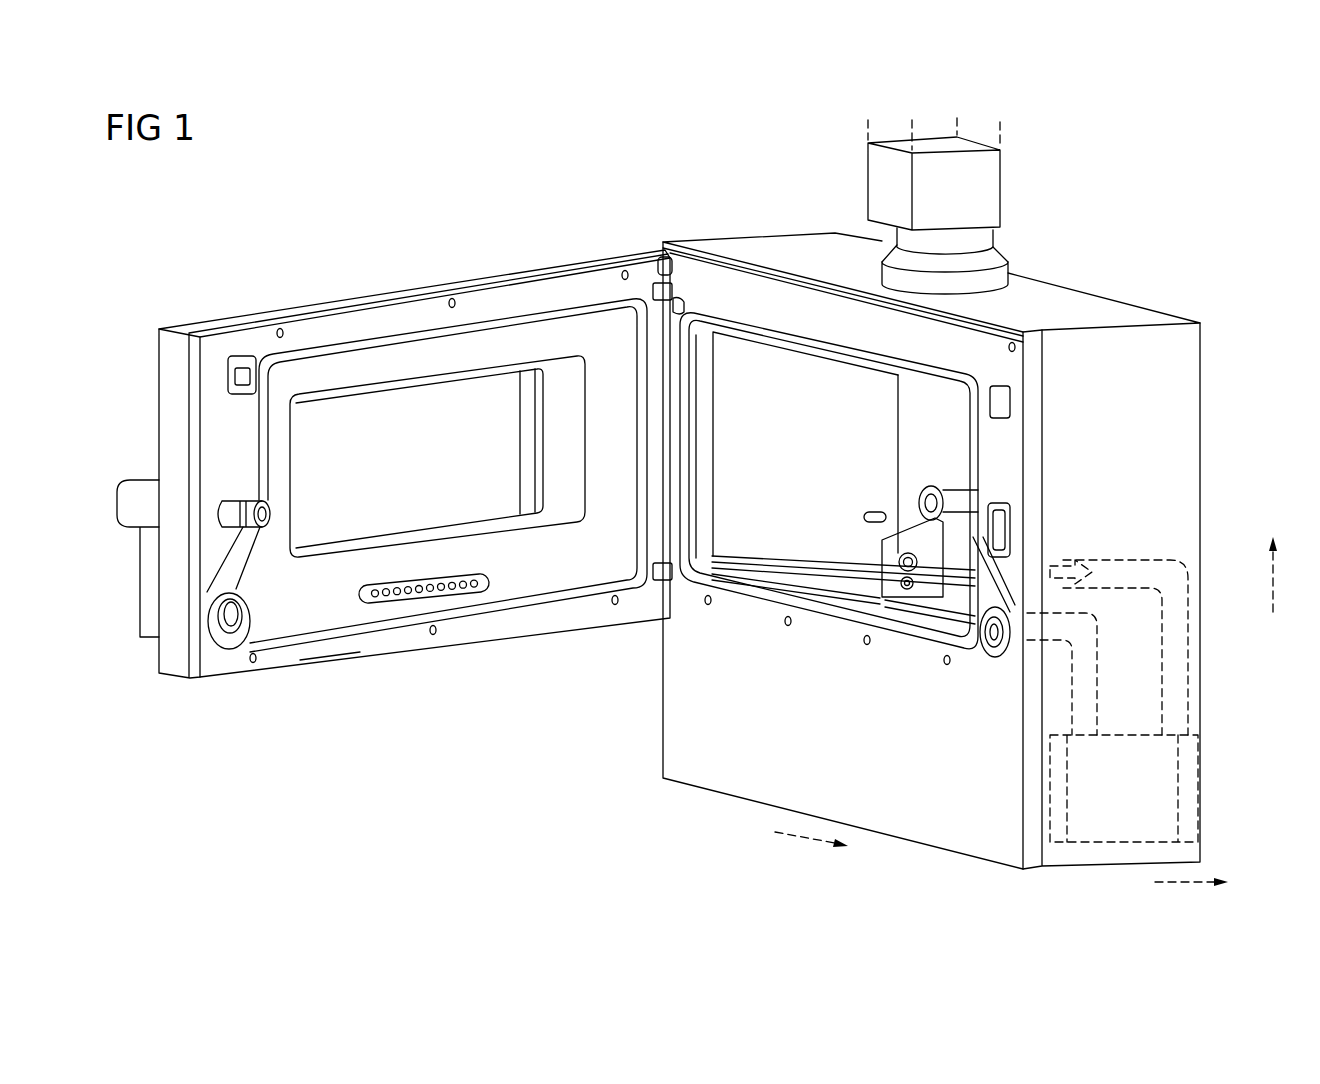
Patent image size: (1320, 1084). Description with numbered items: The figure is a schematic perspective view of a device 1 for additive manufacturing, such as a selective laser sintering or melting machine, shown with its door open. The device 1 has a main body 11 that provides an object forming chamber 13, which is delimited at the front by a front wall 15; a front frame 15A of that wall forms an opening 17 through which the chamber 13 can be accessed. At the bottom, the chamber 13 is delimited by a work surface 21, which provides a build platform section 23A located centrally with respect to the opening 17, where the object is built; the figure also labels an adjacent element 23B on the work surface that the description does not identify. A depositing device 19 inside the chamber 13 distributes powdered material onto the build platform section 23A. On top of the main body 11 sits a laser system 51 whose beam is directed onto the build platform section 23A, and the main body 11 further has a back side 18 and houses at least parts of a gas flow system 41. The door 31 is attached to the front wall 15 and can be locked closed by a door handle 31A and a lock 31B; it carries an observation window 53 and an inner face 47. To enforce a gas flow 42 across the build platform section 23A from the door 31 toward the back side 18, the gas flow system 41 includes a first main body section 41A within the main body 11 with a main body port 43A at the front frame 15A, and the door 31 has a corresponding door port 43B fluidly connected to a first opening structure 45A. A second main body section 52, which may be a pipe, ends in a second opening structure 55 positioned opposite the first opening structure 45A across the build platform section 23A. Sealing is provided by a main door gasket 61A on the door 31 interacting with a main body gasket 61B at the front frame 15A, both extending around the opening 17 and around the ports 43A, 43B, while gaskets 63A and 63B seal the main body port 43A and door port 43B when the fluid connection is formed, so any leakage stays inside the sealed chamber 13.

The device 1 is at (450, 803).
The main body 11 is at (1250, 240).
The object forming chamber 13 is at (750, 517).
The front wall 15 is at (688, 262).
The front frame 15A is at (800, 290).
The opening 17 is at (764, 354).
The back side 18 is at (1225, 432).
The depositing device 19 is at (905, 540).
The work surface 21 is at (812, 555).
The build platform section 23A is at (942, 588).
The guide rail 23B is at (868, 562).
The door 31 is at (333, 278).
The door handle 31A is at (145, 483).
The lock 31B is at (248, 500).
The gas flow system 41 is at (1240, 805).
The first main body section 41A is at (1105, 655).
The gas flow 42 is at (1080, 565).
The main body port 43A is at (1000, 640).
The door port 43B is at (242, 602).
The first opening structure 45A is at (457, 585).
The inner face 47 is at (367, 632).
The laser system 51 is at (878, 195).
The second main body section 52 is at (1188, 605).
The observation window 53 is at (455, 490).
The second opening structure 55 is at (1125, 560).
The main door gasket 61A is at (545, 310).
The main body gasket 61B is at (850, 628).
The gasket 63A is at (995, 660).
The gasket 63B is at (243, 622).